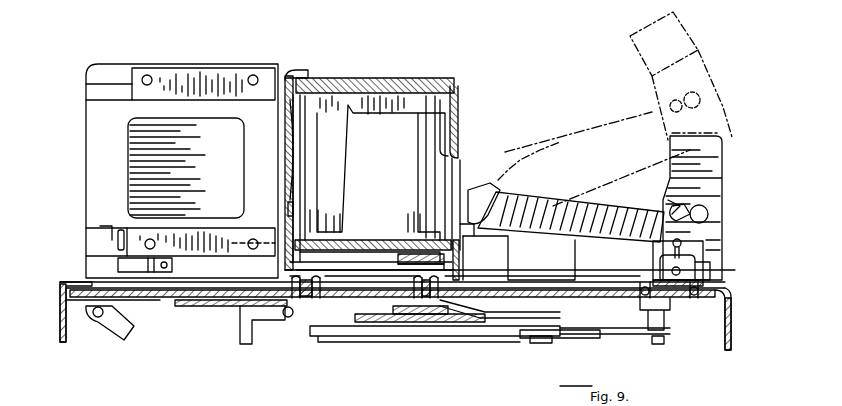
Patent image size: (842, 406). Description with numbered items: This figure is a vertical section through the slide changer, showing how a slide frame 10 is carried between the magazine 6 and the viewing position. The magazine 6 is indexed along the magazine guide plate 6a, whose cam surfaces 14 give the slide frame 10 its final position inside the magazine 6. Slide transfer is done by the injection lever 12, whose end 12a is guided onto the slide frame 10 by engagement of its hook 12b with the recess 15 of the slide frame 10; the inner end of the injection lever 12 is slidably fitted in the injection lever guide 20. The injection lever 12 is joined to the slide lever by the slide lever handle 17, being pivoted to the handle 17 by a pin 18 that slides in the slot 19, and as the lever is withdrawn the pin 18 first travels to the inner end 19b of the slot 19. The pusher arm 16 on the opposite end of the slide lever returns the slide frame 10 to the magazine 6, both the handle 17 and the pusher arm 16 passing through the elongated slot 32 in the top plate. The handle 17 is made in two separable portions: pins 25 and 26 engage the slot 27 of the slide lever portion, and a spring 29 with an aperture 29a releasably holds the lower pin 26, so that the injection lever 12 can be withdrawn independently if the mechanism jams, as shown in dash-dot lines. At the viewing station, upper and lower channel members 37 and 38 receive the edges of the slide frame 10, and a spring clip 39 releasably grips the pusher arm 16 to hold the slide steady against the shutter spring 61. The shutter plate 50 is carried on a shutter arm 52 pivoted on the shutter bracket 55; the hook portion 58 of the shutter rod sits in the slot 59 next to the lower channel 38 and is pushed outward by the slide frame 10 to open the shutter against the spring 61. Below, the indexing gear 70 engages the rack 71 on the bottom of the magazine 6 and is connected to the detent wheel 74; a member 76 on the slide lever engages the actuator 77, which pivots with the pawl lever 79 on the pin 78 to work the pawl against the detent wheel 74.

The magazine 6 is at (420, 82).
The magazine guide plate 6a is at (300, 72).
The slide frame 10 is at (438, 142).
The injection lever 12 is at (578, 150).
The end of injection lever 12a is at (470, 198).
The hook 12b is at (470, 220).
The cam surfaces 14 is at (296, 150).
The recess 15 is at (468, 228).
The pusher arm 16 is at (296, 210).
The slide lever handle 17 is at (708, 88).
The pin 18 is at (706, 208).
The slot 19 is at (684, 208).
The inner end of slot 19b is at (668, 204).
The injection lever guide 20 is at (498, 164).
The pin 25 is at (672, 242).
The lower pin 26 is at (706, 254).
The slot 27 is at (660, 262).
The spring 29 is at (712, 270).
The aperture 29a is at (672, 272).
The elongated slot 32 is at (360, 296).
The channel member 37 is at (212, 75).
The channel member 38 is at (244, 228).
The spring clip 39 is at (118, 262).
The shutter plate 50 is at (196, 162).
The shutter arm 52 is at (118, 328).
The shutter bracket 55 is at (241, 338).
The hook portion 58 is at (118, 240).
The slot 59 is at (100, 228).
The spring 61 is at (214, 306).
The indexing gear 70 is at (388, 252).
The rack 71 is at (462, 258).
The detent wheel 74 is at (380, 322).
The actuator-engaging member 76 is at (536, 342).
The actuator 77 is at (516, 340).
The pin 78 is at (664, 346).
The pawl lever 79 is at (606, 334).